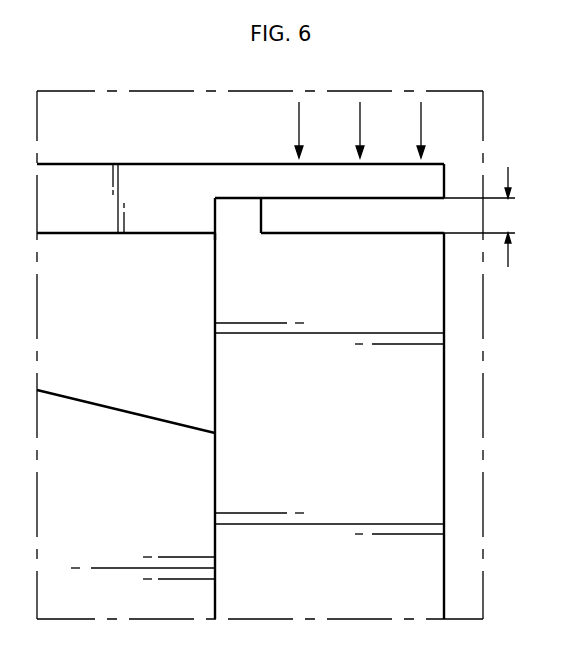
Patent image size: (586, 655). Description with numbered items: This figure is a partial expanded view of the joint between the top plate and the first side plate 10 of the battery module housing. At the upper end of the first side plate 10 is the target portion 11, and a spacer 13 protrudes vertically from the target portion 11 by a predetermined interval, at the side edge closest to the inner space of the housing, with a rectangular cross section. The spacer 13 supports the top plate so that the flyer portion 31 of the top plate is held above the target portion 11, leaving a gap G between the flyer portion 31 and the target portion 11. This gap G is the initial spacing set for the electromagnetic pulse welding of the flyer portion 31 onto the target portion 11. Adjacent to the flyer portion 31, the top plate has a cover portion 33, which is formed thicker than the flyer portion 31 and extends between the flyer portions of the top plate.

The first side plate 10 is at (455, 370).
The target portion 11 is at (393, 232).
The spacer 13 is at (240, 215).
The flyer portion 31 is at (333, 178).
The cover portion 33 is at (77, 178).
The gap G is at (487, 217).